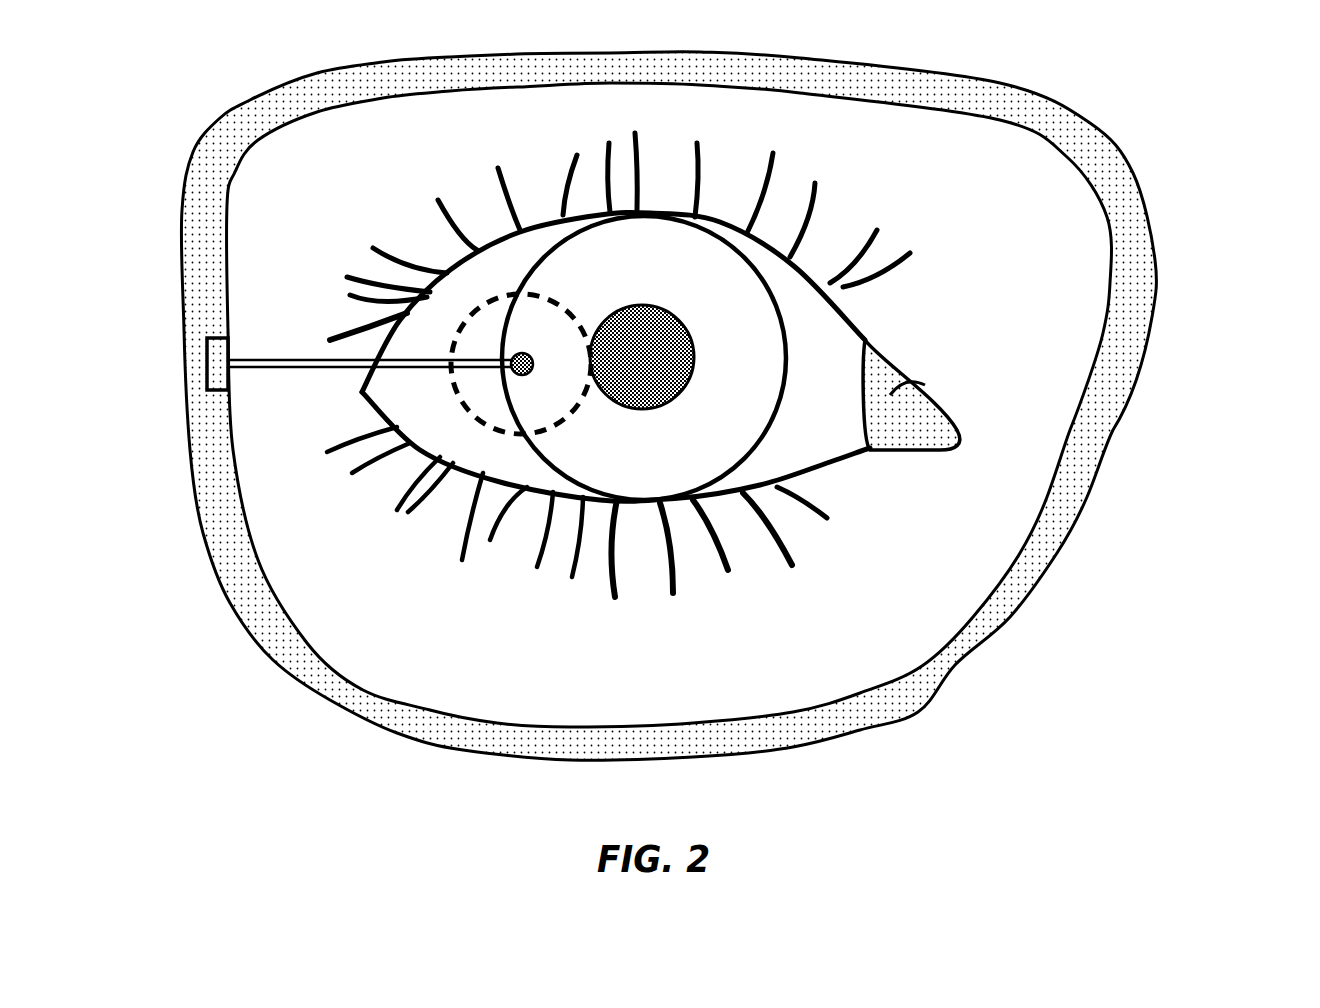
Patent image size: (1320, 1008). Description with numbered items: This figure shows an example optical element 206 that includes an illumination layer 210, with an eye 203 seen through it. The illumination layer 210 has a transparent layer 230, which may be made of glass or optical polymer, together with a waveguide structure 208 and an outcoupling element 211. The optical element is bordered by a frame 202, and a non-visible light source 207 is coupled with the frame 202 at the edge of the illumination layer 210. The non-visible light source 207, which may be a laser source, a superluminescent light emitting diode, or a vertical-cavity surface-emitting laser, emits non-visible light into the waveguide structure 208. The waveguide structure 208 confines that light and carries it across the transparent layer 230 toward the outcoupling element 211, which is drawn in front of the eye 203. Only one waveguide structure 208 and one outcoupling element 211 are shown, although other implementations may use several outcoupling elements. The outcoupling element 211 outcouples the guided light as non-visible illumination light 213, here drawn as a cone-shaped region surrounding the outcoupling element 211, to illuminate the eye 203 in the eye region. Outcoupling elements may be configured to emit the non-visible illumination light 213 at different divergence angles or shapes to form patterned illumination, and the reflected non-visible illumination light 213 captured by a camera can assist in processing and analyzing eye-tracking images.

The frame 202 is at (1095, 130).
The eye 203 is at (823, 320).
The optical element 206 is at (1311, 79).
The non-visible light source 207 is at (230, 342).
The waveguide structure 208 is at (258, 368).
The illumination layer 210 is at (250, 146).
The outcoupling element 211 is at (532, 353).
The non-visible illumination light 213 is at (572, 413).
The transparent layer 230 is at (988, 211).